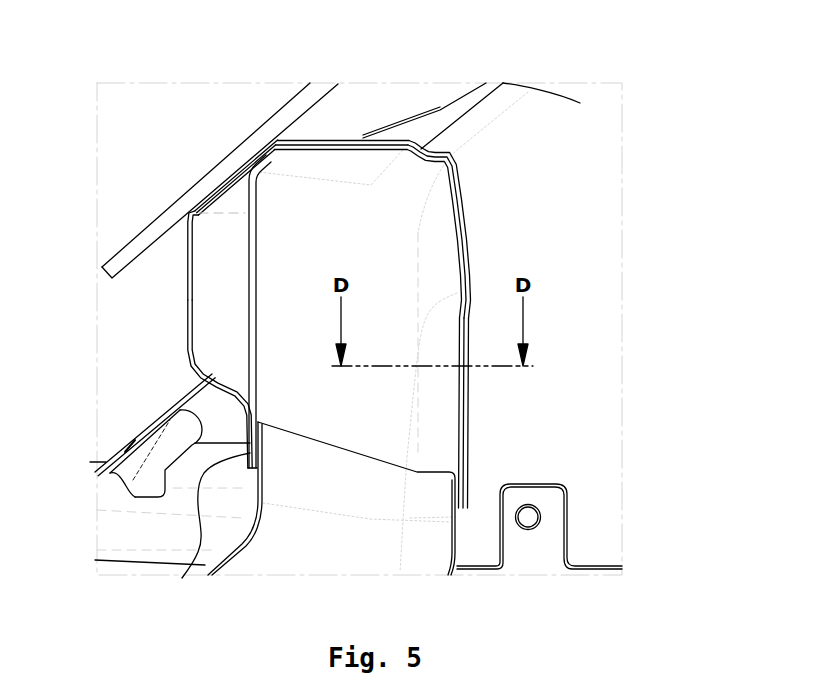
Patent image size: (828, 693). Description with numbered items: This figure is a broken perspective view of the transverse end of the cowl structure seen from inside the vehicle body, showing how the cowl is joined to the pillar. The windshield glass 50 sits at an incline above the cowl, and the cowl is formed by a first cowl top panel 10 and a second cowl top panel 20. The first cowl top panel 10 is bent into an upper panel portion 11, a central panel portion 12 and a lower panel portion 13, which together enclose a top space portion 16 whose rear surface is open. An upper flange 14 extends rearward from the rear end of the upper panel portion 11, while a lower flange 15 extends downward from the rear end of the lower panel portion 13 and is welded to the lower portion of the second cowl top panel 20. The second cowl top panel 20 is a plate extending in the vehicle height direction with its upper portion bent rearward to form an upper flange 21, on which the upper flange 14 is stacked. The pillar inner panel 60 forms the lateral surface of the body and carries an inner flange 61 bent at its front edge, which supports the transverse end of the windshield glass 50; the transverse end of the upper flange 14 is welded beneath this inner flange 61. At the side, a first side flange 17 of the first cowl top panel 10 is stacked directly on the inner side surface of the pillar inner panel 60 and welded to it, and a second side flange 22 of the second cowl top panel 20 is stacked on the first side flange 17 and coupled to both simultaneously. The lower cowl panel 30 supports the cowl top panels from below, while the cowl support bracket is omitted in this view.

The first cowl top panel 10 is at (176, 298).
The upper panel portion 11 is at (242, 163).
The central panel portion 12 is at (188, 255).
The lower panel portion 13 is at (180, 410).
The upper flange 14 is at (337, 141).
The lower flange 15 is at (182, 578).
The top space portion 16 is at (218, 244).
The first side flange 17 is at (463, 221).
The second cowl top panel 20 is at (236, 340).
The upper flange 21 is at (300, 152).
The second side flange 22 is at (459, 415).
The lower cowl panel 30 is at (468, 556).
The windshield glass 50 is at (195, 159).
The pillar inner panel 60 is at (596, 117).
The inner flange 61 is at (483, 113).